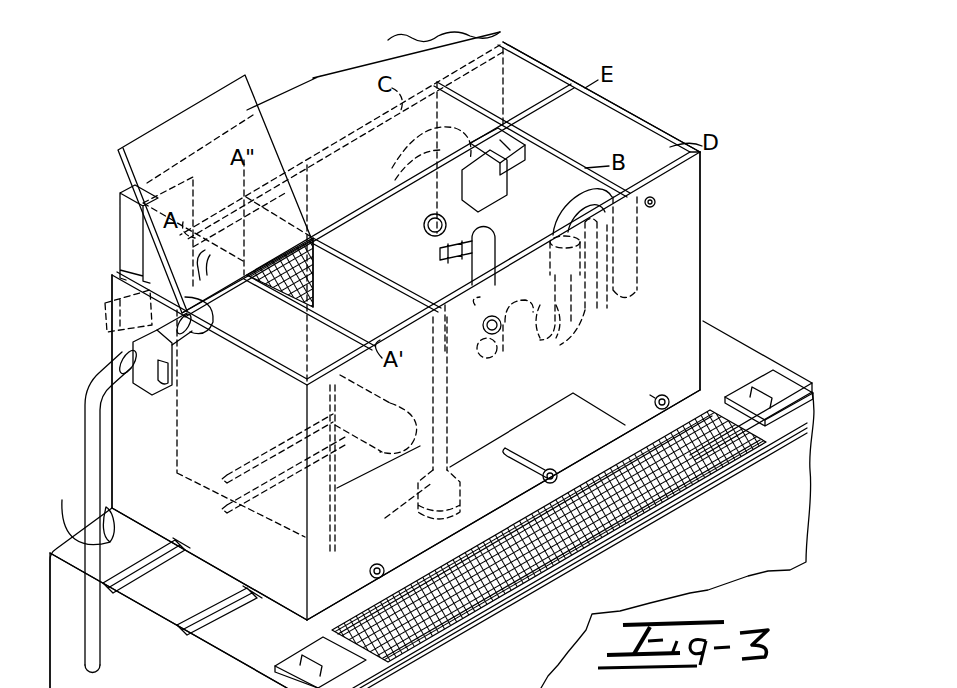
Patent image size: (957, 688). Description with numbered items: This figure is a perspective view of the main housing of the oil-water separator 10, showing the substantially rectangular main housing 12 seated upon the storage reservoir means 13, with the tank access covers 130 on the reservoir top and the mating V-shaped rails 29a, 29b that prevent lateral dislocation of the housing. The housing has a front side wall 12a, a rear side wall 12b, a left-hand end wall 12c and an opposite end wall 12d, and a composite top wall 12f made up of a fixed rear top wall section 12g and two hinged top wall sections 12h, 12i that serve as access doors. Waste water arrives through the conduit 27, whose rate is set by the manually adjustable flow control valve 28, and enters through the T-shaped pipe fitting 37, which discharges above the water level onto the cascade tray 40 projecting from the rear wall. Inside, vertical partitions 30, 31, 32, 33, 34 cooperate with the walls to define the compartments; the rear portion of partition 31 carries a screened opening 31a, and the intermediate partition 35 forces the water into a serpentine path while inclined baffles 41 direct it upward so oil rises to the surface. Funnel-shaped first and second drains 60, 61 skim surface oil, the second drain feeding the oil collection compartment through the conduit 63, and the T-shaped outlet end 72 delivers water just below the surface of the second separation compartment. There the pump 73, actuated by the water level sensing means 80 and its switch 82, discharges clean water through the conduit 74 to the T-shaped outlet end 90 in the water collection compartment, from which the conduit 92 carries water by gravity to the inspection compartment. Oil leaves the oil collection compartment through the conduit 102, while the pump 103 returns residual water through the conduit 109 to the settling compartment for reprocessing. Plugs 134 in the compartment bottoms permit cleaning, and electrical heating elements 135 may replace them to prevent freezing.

The oil-water separator 10 is at (774, 250).
The main housing 12 is at (634, 98).
The front side wall 12a is at (700, 268).
The rear side wall 12b is at (360, 112).
The left-hand end wall 12c is at (245, 406).
The right-hand end wall 12d is at (656, 128).
The composite top wall 12f is at (315, 72).
The fixed rear top wall section 12g is at (118, 256).
The hinged top wall section 12h is at (158, 133).
The hinged top wall section 12i is at (320, 142).
The storage reservoir means 13 is at (785, 310).
The conduit 27 is at (101, 423).
The flow control valve 28 is at (128, 344).
The V-shaped rail 29a is at (246, 585).
The V-shaped rail 29b is at (226, 603).
The partition 30 is at (420, 210).
The partition 31 is at (314, 312).
The screened opening 31a is at (294, 258).
The partition 32 is at (435, 275).
The partition 33 is at (626, 336).
The partition 34 is at (594, 142).
The intermediate partition 35 is at (295, 330).
The T-shaped pipe fitting 37 is at (181, 260).
The cascade tray 40 is at (140, 302).
The baffles 41 is at (213, 498).
The first drain 60 is at (424, 233).
The second drain 61 is at (540, 270).
The conduit 63 is at (518, 337).
The outlet end 72 is at (489, 326).
The pump 73 is at (460, 492).
The conduit 74 is at (640, 275).
The water level sensing means 80 is at (518, 242).
The switch 82 is at (482, 210).
The outlet end 90 is at (656, 204).
The conduit 92 is at (585, 289).
The conduit 102 is at (76, 498).
The pump 103 is at (518, 118).
The conduit 109 is at (402, 165).
The tank access covers 130 is at (758, 388).
The plugs 134 is at (658, 394).
The electrical heating elements 135 is at (520, 455).